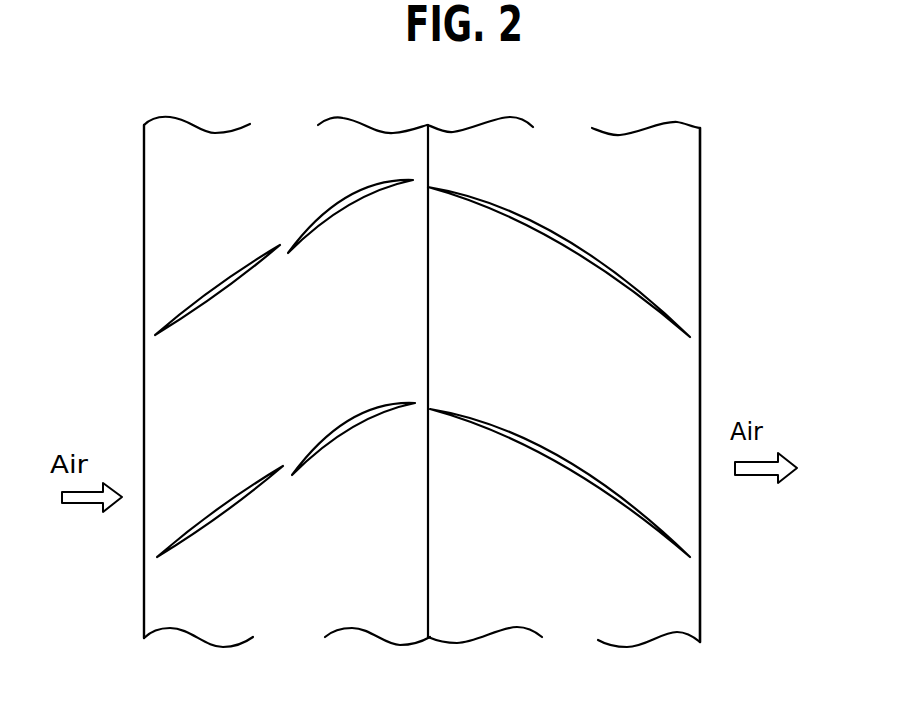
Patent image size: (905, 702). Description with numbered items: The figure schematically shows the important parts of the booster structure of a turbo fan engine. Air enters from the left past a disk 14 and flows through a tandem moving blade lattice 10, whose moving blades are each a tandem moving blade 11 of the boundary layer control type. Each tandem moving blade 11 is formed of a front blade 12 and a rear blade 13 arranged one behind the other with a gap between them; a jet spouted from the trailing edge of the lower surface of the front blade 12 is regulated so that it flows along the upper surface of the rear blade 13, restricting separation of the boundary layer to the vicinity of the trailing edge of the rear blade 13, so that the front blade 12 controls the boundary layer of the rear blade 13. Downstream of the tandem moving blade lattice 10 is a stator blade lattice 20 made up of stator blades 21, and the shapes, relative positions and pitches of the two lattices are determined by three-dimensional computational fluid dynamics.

The tandem moving blade lattice 10 is at (250, 368).
The tandem moving blade 11 is at (285, 368).
The front blade 12 is at (220, 297).
The rear blade 13 is at (358, 207).
The disk 14 is at (143, 370).
The stator blade lattice 20 is at (599, 377).
The stator blade 21 is at (572, 252).